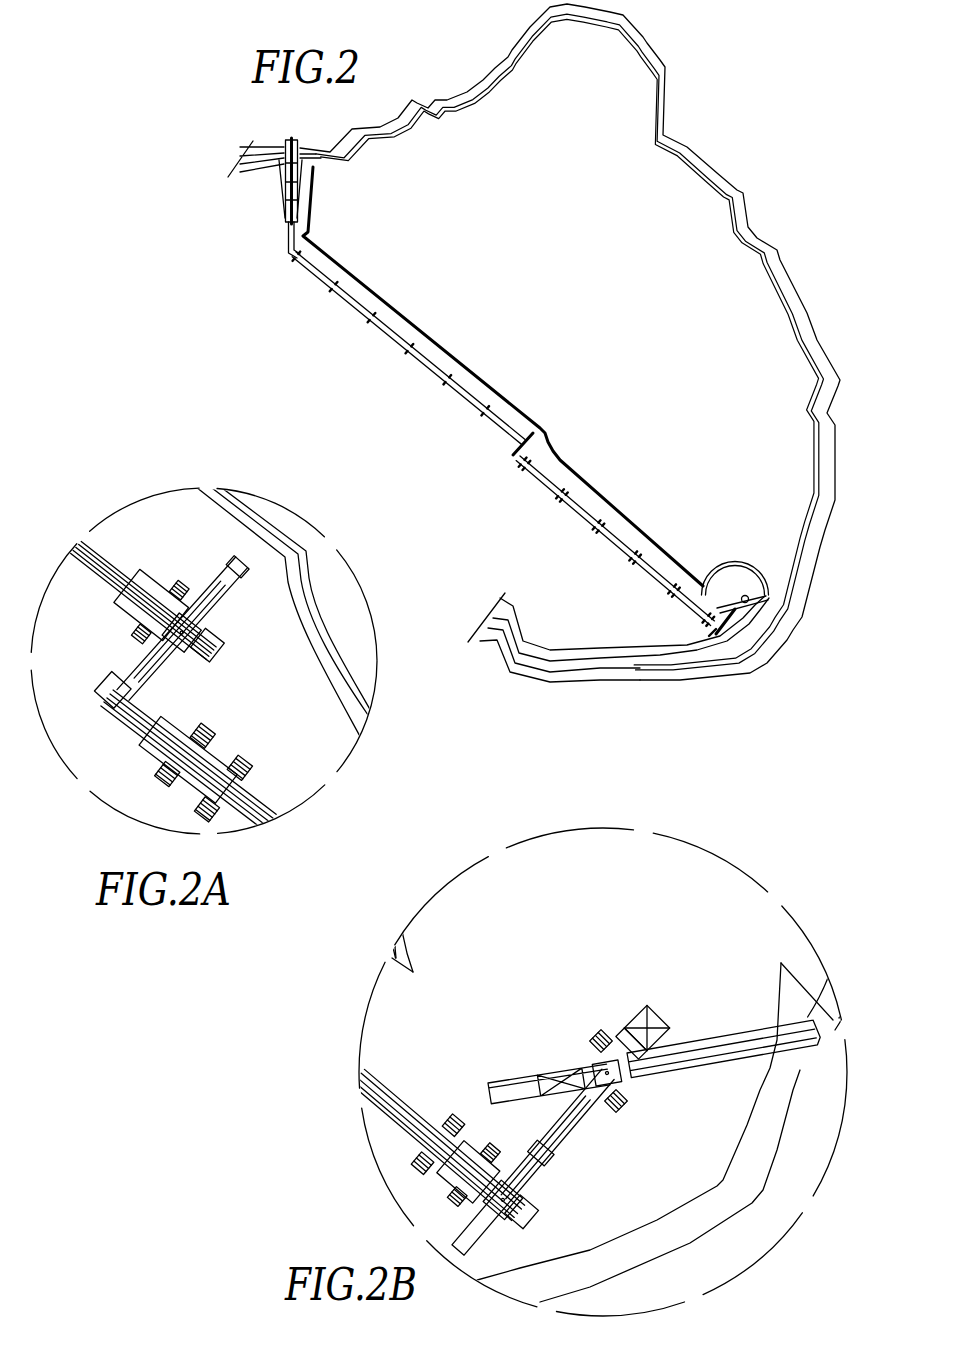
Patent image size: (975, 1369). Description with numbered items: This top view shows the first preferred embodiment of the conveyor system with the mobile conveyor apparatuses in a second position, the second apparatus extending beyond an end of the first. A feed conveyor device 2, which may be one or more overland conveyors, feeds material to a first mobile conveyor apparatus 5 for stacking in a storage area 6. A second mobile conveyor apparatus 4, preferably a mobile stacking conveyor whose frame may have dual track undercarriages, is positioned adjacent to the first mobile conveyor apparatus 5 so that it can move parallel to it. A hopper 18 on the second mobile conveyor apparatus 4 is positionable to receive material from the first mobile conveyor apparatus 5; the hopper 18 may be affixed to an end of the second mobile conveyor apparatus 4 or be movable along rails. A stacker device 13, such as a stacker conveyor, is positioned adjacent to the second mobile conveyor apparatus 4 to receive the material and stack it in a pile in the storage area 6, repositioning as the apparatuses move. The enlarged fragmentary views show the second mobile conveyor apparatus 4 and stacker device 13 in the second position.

In FIG. 2, the feed conveyor device 2 is at (283, 212).
In FIG. 2, the second mobile conveyor apparatus 4 is at (543, 482).
In FIG. 2A, the second mobile conveyor apparatus 4 is at (193, 780).
In FIG. 2B, the second mobile conveyor apparatus 4 is at (382, 1122).
In FIG. 2, the first mobile conveyor apparatus 5 is at (346, 300).
In FIG. 2A, the first mobile conveyor apparatus 5 is at (105, 545).
In FIG. 2, the storage area 6 is at (663, 197).
In FIG. 2, the stacker device 13 is at (733, 617).
In FIG. 2B, the stacker device 13 is at (578, 1115).
In FIG. 2A, the hopper 18 is at (117, 720).